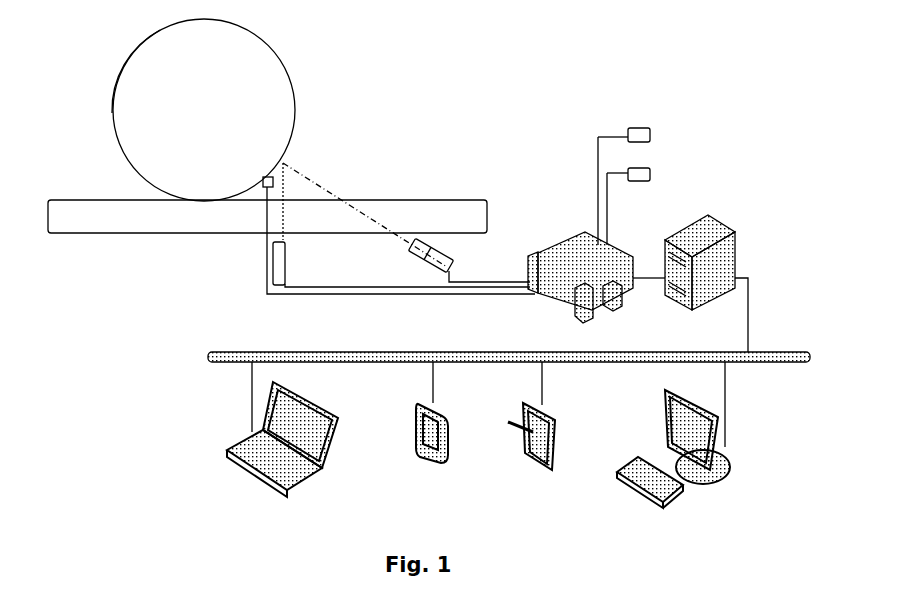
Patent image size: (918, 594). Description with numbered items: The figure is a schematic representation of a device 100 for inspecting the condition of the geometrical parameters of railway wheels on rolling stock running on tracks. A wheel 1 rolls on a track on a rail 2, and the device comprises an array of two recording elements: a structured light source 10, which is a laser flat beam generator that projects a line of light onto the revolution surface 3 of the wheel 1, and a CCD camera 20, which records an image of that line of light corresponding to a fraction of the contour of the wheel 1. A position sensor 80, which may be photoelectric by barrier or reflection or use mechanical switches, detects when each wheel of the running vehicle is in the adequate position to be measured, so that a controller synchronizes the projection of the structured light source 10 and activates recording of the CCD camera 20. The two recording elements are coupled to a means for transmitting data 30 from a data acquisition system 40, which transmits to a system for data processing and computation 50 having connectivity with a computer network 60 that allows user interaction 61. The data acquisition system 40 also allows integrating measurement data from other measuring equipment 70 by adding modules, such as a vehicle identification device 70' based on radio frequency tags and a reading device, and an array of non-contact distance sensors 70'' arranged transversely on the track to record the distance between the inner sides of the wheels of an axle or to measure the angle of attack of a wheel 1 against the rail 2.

The device 100 is at (398, 80).
The wheel 1 is at (159, 83).
The rail 2 is at (130, 217).
The revolution surface 3 is at (112, 113).
The structured light source 10 is at (437, 250).
The CCD camera 20 is at (277, 253).
The means for transmitting data 30 is at (477, 298).
The data acquisition system 40 is at (572, 233).
The system for data processing and computation 50 is at (718, 213).
The computer network 60 is at (230, 372).
The user interaction 61 is at (275, 448).
The other measuring equipment 70 is at (592, 113).
The vehicle identification device 70' is at (673, 109).
The array of non-contact distance sensors 70'' is at (676, 147).
The position sensor 80 is at (264, 183).